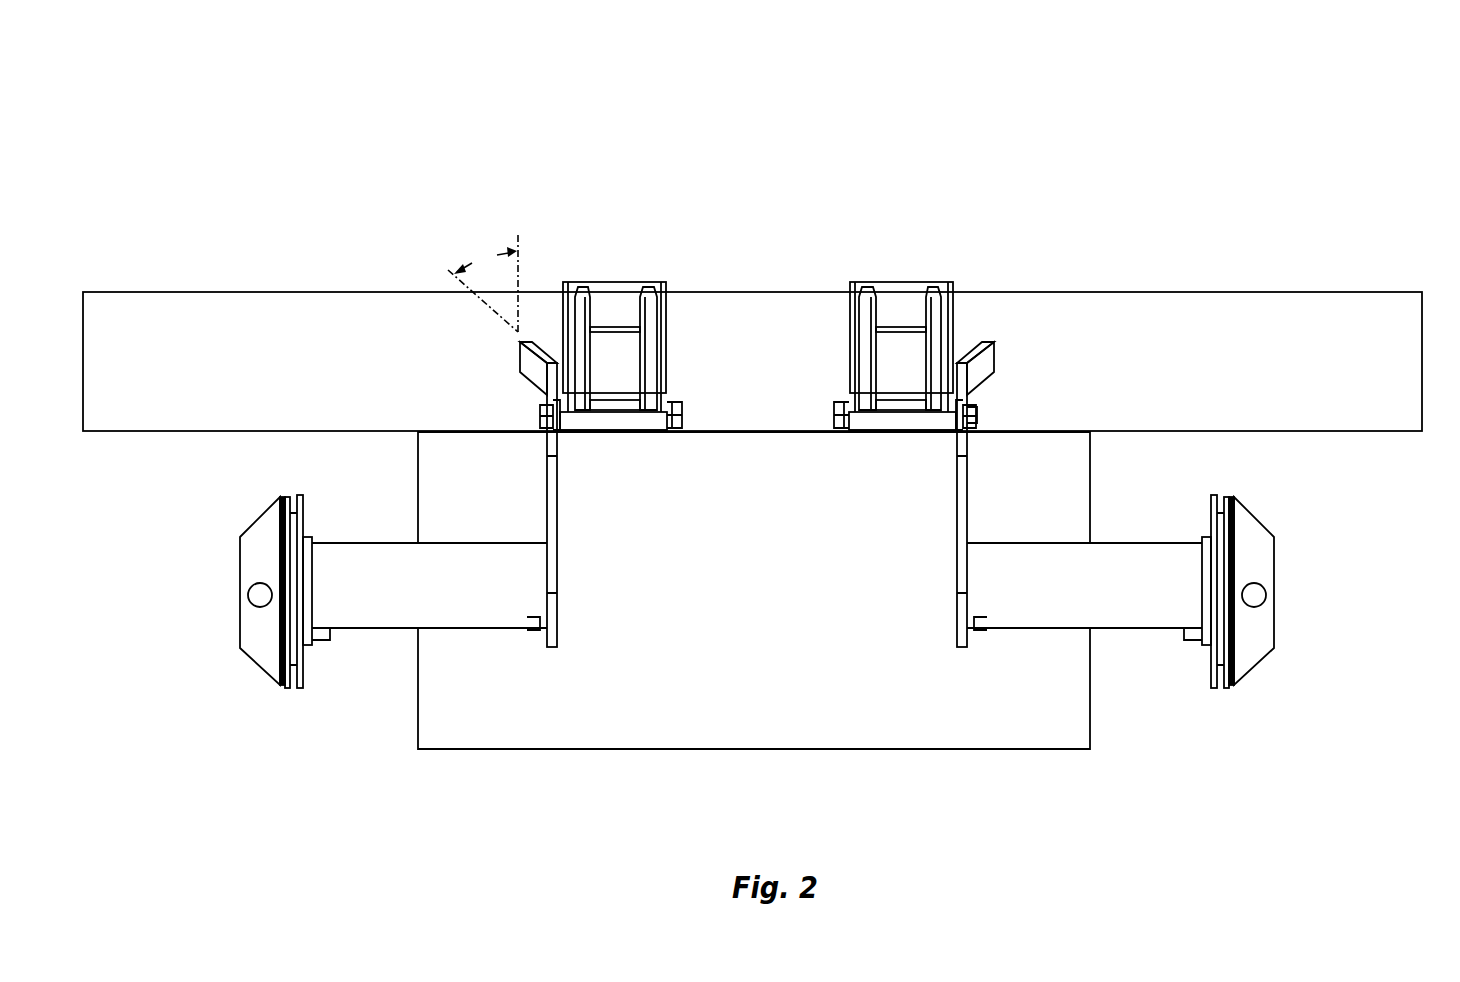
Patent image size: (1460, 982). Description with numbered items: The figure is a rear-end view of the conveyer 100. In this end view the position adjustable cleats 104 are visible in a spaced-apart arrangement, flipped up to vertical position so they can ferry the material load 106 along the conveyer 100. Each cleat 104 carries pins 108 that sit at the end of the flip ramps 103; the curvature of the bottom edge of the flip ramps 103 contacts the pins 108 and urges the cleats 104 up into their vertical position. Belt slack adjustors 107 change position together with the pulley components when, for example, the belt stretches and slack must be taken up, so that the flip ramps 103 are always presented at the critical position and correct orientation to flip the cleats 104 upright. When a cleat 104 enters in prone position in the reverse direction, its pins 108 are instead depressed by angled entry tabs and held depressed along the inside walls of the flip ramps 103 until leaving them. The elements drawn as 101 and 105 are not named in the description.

The conveyer 100 is at (792, 112).
The carriage block 101 is at (763, 675).
The flip ramps 103 is at (957, 527).
The position adjustable cleats 104 is at (610, 278).
The axle 105 is at (1035, 543).
The material load 106 is at (370, 295).
The belt slack adjustors 107 is at (1272, 618).
The pins 108 is at (684, 418).